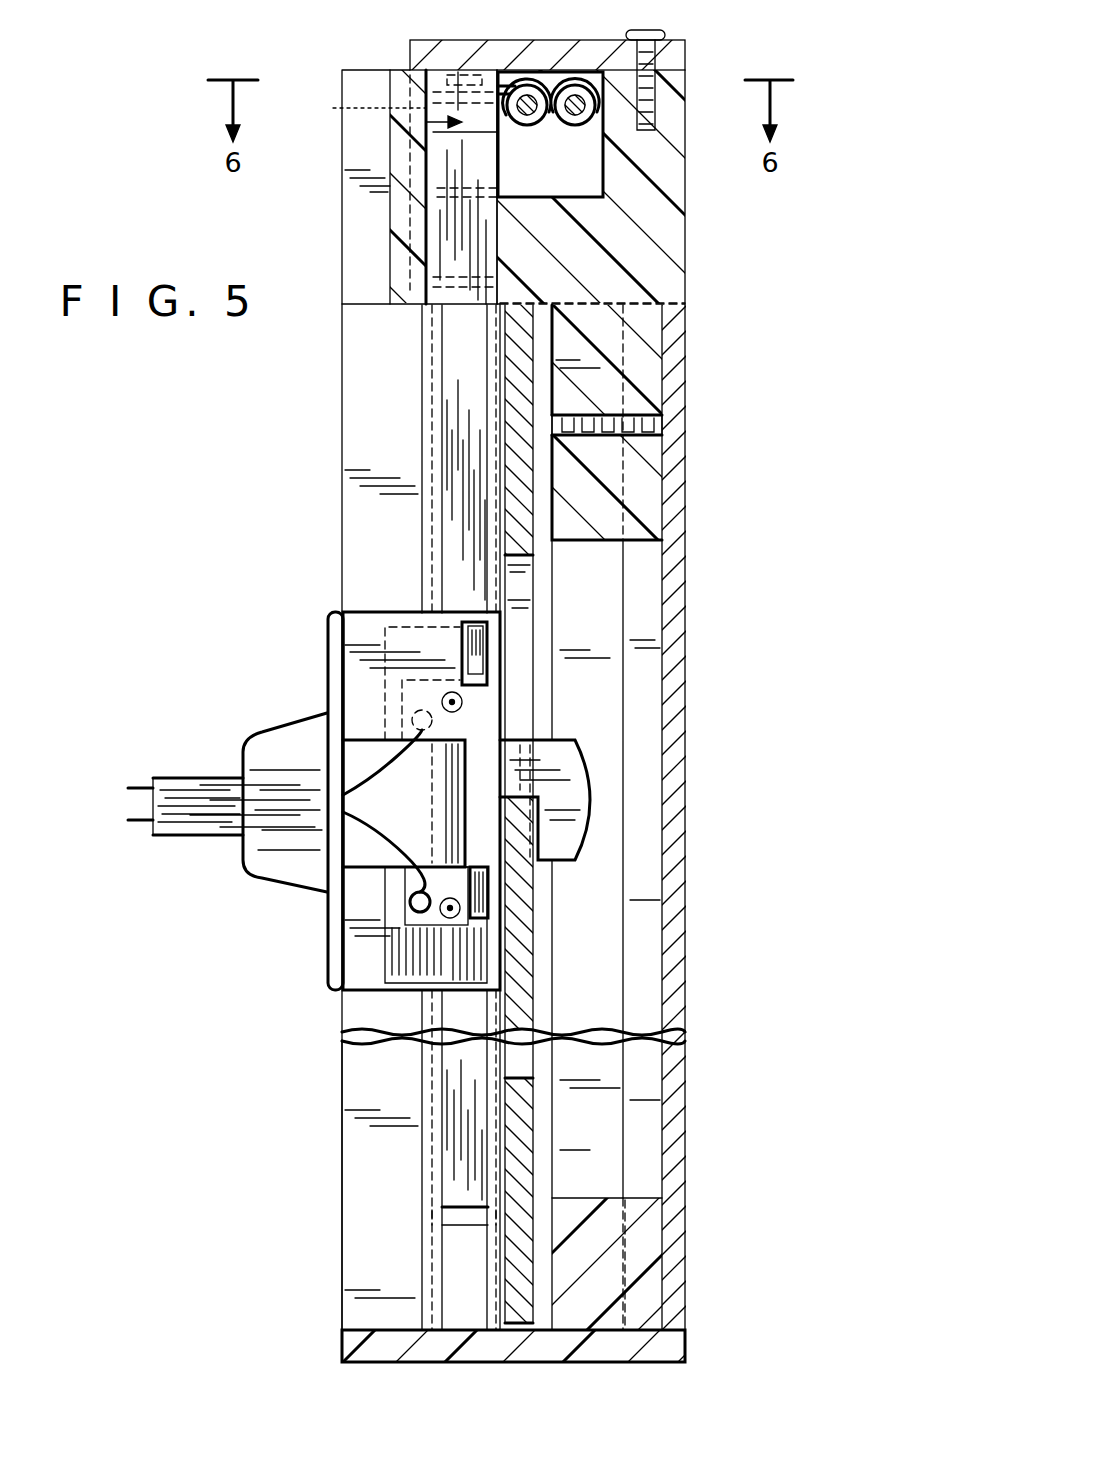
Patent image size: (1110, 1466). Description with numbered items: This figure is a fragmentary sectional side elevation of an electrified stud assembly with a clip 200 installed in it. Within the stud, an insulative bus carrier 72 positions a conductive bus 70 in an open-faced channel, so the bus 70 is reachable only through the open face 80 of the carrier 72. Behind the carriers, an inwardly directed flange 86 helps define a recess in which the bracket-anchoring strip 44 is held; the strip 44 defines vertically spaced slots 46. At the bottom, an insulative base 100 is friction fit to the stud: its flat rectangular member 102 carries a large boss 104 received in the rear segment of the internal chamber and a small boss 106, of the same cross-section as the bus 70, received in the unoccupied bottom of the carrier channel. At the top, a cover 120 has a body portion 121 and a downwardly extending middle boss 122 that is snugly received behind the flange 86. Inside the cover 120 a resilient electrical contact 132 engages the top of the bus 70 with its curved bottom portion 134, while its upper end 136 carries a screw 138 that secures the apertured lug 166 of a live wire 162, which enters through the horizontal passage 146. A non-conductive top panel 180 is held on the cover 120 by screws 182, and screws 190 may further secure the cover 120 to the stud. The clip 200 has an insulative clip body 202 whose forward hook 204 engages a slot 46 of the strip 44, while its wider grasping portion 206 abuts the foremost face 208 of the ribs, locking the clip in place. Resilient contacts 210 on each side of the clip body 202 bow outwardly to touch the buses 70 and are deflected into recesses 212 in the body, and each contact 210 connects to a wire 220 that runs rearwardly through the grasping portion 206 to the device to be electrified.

The bracket-anchoring strip 44 is at (520, 358).
The slots 46 is at (522, 665).
The bus 70 is at (455, 308).
The bus carrier 72 is at (422, 528).
The open face 80 is at (462, 457).
The flange 86 is at (543, 573).
The base 100 is at (600, 1270).
The rectangular member 102 is at (665, 1348).
The large boss 104 is at (645, 1210).
The small boss 106 is at (462, 1296).
The cover 120 is at (687, 258).
The body portion 121 is at (660, 277).
The middle boss 122 is at (645, 500).
The electrical contact 132 is at (388, 132).
The curved bottom portion 134 is at (392, 240).
The upper end 136 is at (370, 109).
The screw 138 is at (462, 60).
The passage 146 is at (605, 190).
The live wire 162 is at (575, 127).
The apertured lug 166 is at (550, 85).
The top panel 180 is at (410, 50).
The screw 182 is at (665, 32).
The screw 190 is at (660, 428).
The clip 200 is at (248, 733).
The clip body 202 is at (258, 848).
The hook 204 is at (592, 800).
The grasping portion 206 is at (327, 921).
The foremost face 208 is at (342, 1082).
The contact 210 is at (462, 645).
The recess 212 is at (490, 632).
The wire 220 is at (128, 821).